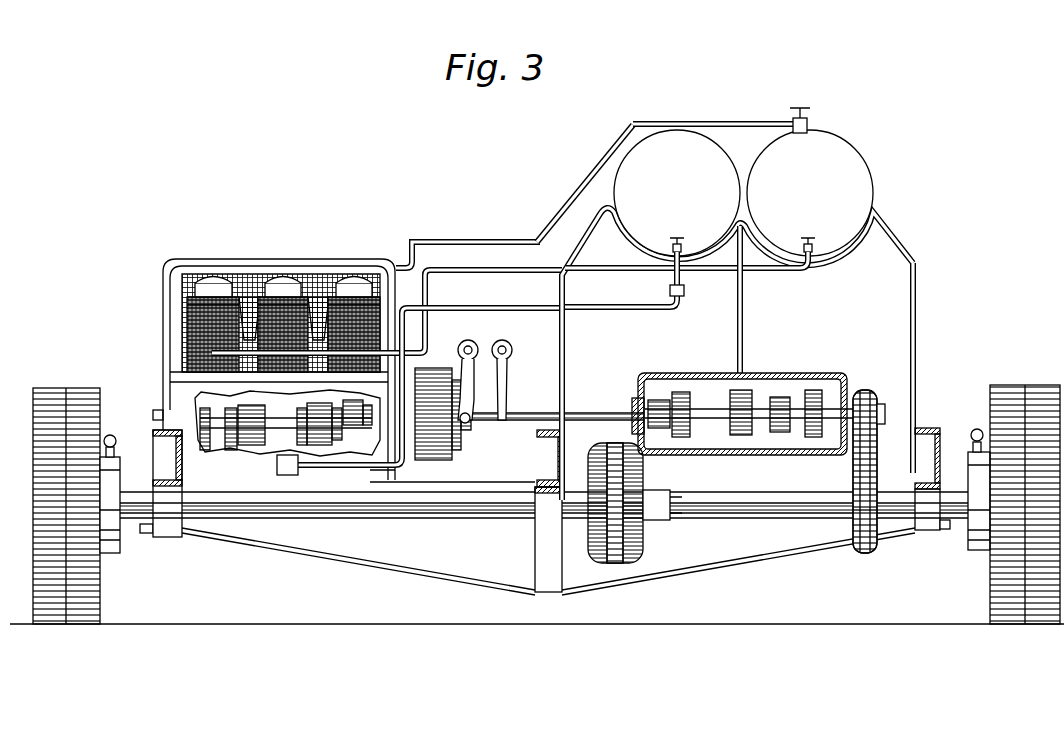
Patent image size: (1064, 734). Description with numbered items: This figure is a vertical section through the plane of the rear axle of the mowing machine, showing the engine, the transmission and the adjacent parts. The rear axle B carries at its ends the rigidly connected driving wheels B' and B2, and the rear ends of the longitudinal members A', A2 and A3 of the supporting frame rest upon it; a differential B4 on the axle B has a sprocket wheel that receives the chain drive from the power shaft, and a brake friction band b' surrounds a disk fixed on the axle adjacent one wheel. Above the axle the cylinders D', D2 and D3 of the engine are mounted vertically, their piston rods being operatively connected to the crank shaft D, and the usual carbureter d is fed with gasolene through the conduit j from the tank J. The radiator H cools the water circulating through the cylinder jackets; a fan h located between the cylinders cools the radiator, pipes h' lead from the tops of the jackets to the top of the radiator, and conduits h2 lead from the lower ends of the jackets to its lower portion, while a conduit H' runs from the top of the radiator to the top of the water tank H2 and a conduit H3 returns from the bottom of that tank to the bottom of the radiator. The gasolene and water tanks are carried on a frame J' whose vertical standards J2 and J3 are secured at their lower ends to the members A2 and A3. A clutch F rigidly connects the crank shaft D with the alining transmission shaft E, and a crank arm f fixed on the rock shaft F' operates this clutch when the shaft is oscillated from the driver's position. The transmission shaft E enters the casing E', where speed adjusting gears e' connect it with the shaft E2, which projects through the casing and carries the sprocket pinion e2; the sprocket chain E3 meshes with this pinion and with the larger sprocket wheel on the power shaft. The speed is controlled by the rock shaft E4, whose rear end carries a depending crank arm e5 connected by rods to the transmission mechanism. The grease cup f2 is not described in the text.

The radiator H is at (274, 353).
The cylinder D' is at (220, 298).
The cylinder D2 is at (290, 282).
The cylinder D3 is at (350, 286).
The fan h is at (260, 270).
The pipes h' is at (333, 268).
The conduits h2 is at (356, 358).
The crank shaft D is at (250, 414).
The carbureter d is at (290, 477).
The longitudinal member A' is at (152, 480).
The longitudinal member A2 is at (540, 438).
The longitudinal member A3 is at (933, 452).
The rear axle B is at (545, 521).
The driving wheel B' is at (98, 506).
The driving wheel B2 is at (988, 566).
The differential B4 is at (600, 525).
The friction band b' is at (126, 494).
The clutch F is at (443, 429).
The crank arm f is at (459, 350).
The rock shaft F' is at (483, 338).
The transmission shaft E is at (557, 400).
The casing E' is at (754, 340).
The shaft E2 is at (815, 400).
The sprocket chain E3 is at (856, 473).
The rock shaft E4 is at (509, 345).
The speed adjusting gears e' is at (734, 385).
The sprocket pinion e2 is at (871, 393).
The crank arm e5 is at (506, 393).
The grease cup f2 is at (967, 528).
The conduit H' is at (468, 233).
The water tank H2 is at (850, 163).
The conduit H3 is at (716, 271).
The tank J is at (704, 167).
The frame J' is at (585, 183).
The vertical standard J2 is at (561, 344).
The vertical standard J3 is at (914, 311).
The conduit j is at (647, 310).